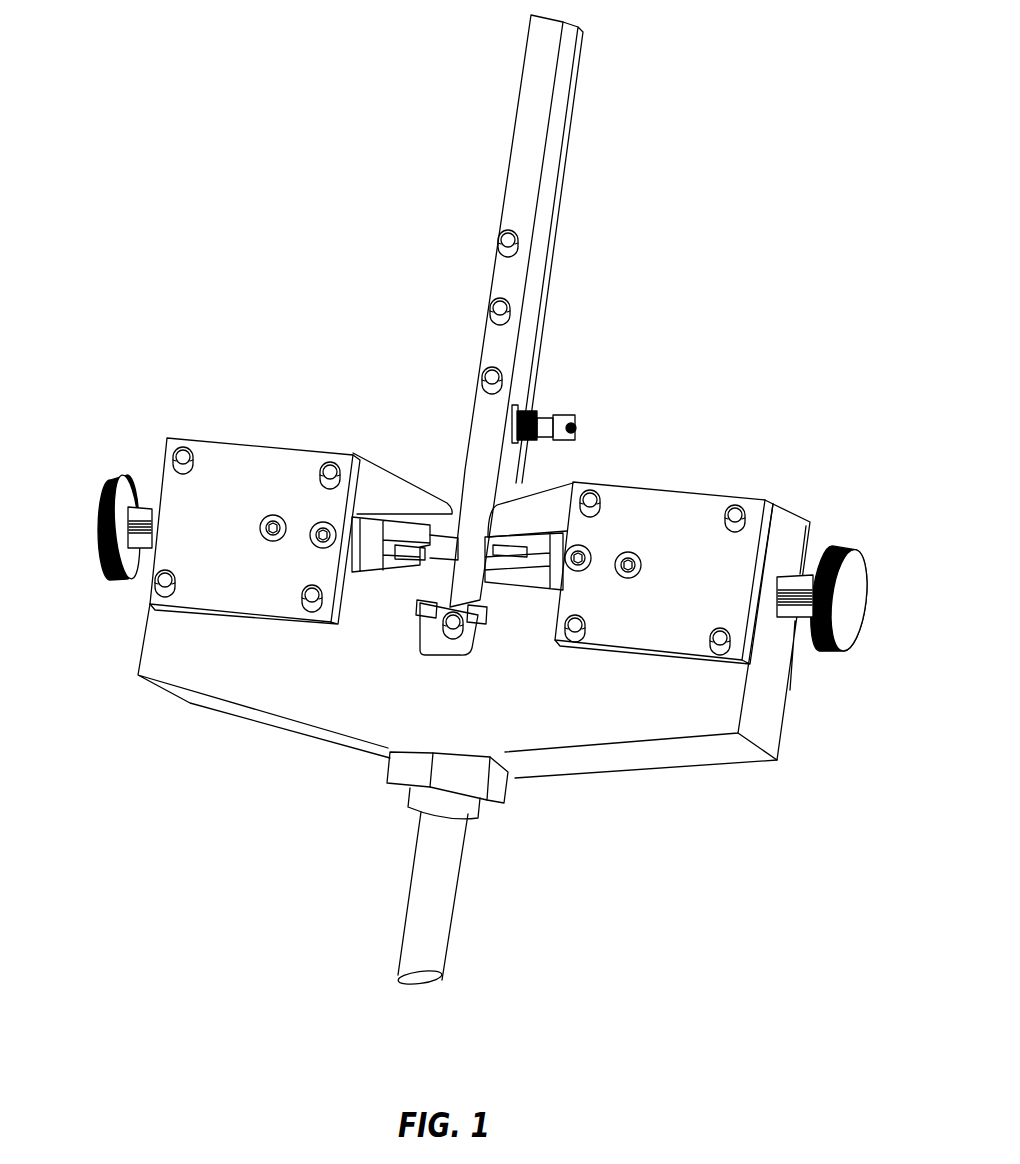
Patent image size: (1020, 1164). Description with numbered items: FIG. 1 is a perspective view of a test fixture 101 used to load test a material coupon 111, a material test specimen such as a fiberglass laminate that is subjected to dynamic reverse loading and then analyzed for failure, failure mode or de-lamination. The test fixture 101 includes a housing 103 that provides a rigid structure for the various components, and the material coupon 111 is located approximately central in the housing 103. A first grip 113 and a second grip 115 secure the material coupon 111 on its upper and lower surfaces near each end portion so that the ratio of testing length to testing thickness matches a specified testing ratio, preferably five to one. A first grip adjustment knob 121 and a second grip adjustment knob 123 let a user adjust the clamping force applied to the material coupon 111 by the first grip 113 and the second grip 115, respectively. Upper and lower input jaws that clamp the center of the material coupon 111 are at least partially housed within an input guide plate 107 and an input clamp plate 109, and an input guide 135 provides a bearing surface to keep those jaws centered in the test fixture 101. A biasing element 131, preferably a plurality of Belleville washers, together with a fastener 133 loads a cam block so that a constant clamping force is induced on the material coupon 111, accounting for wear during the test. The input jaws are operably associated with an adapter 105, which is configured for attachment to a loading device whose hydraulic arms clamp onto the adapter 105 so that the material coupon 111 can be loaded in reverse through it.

The test fixture 101 is at (219, 170).
The housing 103 is at (190, 703).
The adapter 105 is at (403, 918).
The input guide plate 107 is at (517, 115).
The input clamp plate 109 is at (566, 165).
The material coupon 111 is at (495, 573).
The first grip 113 is at (400, 523).
The second grip 115 is at (558, 525).
The first grip adjustment knob 121 is at (130, 582).
The second grip adjustment knob 123 is at (833, 657).
The biasing element 131 is at (537, 413).
The fastener 133 is at (573, 418).
The input guide 135 is at (417, 606).